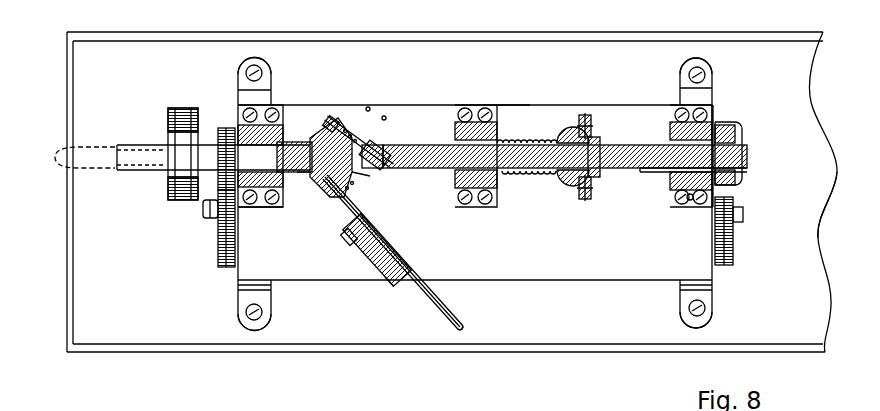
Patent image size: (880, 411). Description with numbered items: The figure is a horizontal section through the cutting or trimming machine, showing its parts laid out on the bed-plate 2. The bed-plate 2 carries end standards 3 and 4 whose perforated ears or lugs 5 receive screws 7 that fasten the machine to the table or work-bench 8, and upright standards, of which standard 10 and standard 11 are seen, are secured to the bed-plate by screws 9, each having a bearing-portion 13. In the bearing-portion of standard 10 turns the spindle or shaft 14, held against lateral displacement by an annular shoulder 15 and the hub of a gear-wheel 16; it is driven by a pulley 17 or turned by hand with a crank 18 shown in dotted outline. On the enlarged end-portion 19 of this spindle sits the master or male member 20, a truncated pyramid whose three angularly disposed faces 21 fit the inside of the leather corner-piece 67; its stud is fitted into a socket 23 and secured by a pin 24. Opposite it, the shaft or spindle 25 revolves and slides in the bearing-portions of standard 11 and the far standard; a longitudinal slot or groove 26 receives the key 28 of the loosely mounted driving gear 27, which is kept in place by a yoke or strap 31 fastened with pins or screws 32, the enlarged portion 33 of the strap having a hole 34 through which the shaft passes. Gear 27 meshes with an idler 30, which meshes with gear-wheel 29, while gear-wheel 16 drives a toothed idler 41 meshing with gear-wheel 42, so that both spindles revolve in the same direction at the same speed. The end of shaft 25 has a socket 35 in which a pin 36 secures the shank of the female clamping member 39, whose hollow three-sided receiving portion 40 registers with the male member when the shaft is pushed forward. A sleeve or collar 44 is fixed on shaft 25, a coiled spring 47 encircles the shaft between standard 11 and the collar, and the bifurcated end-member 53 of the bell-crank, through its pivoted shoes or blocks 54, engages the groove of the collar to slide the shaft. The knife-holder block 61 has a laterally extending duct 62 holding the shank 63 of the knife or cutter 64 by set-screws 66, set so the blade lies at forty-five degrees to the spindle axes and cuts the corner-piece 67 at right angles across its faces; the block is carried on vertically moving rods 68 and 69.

The bed-plate 2 is at (462, 104).
The support or standard 3 is at (241, 100).
The support or standard 4 is at (712, 98).
The perforated ears or lugs 5 is at (271, 66).
The screws 7 is at (255, 68).
The table or work-bench 8 is at (541, 44).
The screws 9 is at (278, 108).
The support or standard 10 is at (265, 208).
The support or standard 11 is at (512, 104).
The bearing-portion 13 is at (247, 127).
The spindle or shaft 14 is at (160, 172).
The annular shoulder 15 is at (300, 142).
The gear-wheel 16 is at (225, 127).
The pulley 17 is at (186, 202).
The crank 18 is at (84, 148).
The enlarged end-portion 19 is at (340, 120).
The master or male member 20 is at (333, 198).
The angularly disposed sides or faces 21 is at (350, 126).
The socket 23 is at (303, 173).
The pin 24 is at (330, 116).
The shaft or spindle 25 is at (749, 155).
The longitudinally extending slot or groove 26 is at (658, 173).
The driving gear 27 is at (741, 121).
The key 28 is at (743, 182).
The gear-wheel 29 is at (735, 262).
The idler 30 is at (744, 218).
The yoke or strap 31 is at (714, 116).
The pins or screws 32 is at (690, 206).
The enlarged portion 33 is at (743, 135).
The hole or opening 34 is at (831, 190).
The socket or receiving portion 35 is at (370, 174).
The pin 36 is at (383, 147).
The female corner-piece clamping member 39 is at (368, 108).
The hollow three-sided receiving portion 40 is at (384, 117).
The toothed idler 41 is at (212, 220).
The gear-wheel 42 is at (218, 257).
The sleeve or collar 44 is at (601, 183).
The coiled spring 47 is at (535, 141).
The yoke-shaped or bifurcated end-member 53 is at (572, 130).
The shoes or blocks 54 is at (593, 132).
The block or knife-holder 61 is at (408, 262).
The laterally extending duct 62 is at (384, 232).
The shank 63 is at (434, 303).
The knife or cutter 64 is at (358, 201).
The set-screws 66 is at (363, 404).
The leather corner-piece 67 is at (352, 127).
The vertically moving rod 68 is at (350, 244).
The vertically moving rod 69 is at (381, 279).